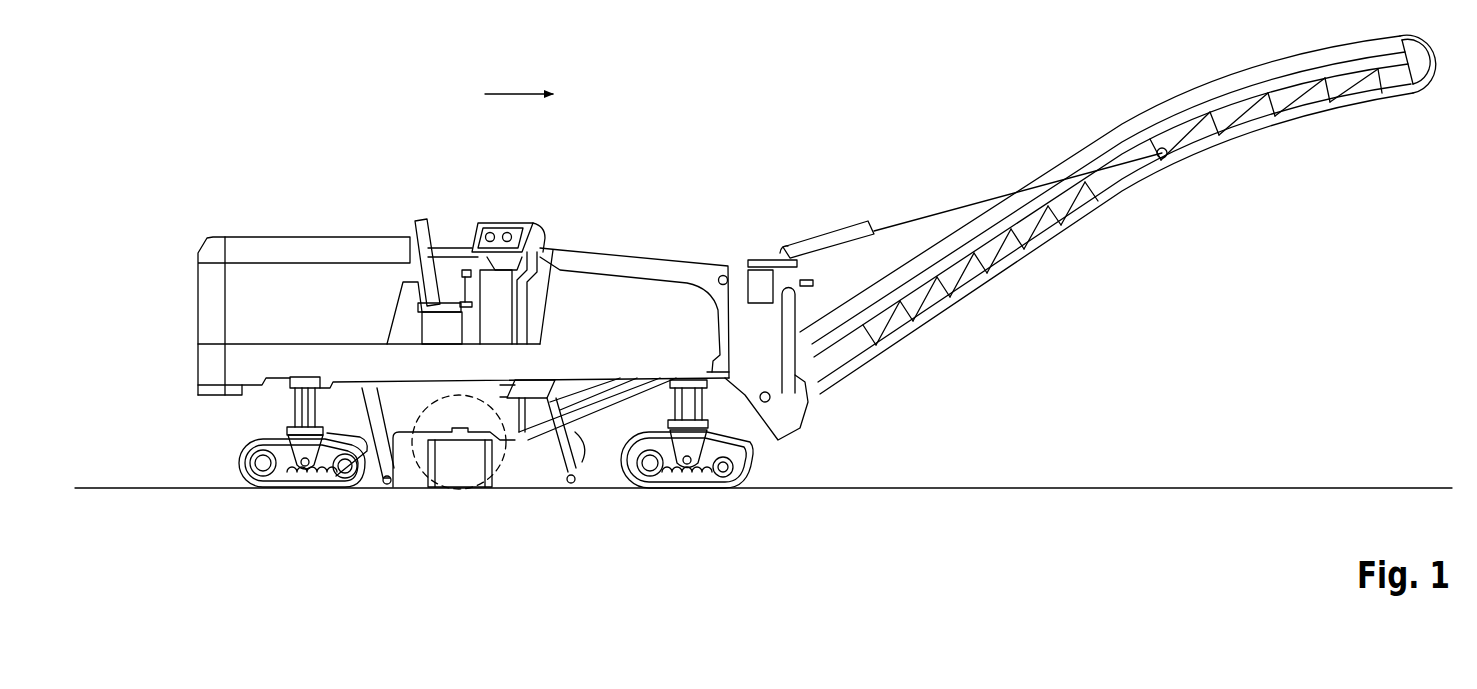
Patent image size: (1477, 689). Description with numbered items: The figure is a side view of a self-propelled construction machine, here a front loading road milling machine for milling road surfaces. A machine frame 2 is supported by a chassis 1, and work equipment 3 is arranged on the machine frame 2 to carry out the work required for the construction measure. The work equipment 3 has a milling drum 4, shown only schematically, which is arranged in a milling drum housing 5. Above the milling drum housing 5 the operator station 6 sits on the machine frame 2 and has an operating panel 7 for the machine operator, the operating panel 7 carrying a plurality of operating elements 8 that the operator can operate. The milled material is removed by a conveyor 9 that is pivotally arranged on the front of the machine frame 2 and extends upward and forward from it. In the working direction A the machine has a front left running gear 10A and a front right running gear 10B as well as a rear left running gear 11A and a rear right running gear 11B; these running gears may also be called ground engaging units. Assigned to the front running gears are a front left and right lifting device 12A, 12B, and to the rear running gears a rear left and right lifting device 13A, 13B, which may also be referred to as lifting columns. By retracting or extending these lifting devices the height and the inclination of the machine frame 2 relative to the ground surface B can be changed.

The chassis 1 is at (208, 415).
The machine frame 2 is at (190, 296).
The work equipment 3 is at (417, 500).
The milling drum 4 is at (508, 468).
The milling drum housing 5 is at (355, 417).
The operator station 6 is at (452, 205).
The operating panel 7 is at (535, 215).
The operating elements 8 is at (509, 222).
The conveyor 9 is at (1097, 127).
The front left running gear 10A is at (758, 460).
The front right running gear 10B is at (752, 462).
The rear left running gear 11A is at (227, 463).
The rear right running gear 11B is at (242, 463).
The front left lifting device 12A is at (781, 424).
The front right lifting device 12B is at (703, 403).
The rear left lifting device 13A is at (206, 423).
The rear right lifting device 13B is at (293, 404).
The working direction A is at (510, 93).
The ground surface B is at (1140, 488).